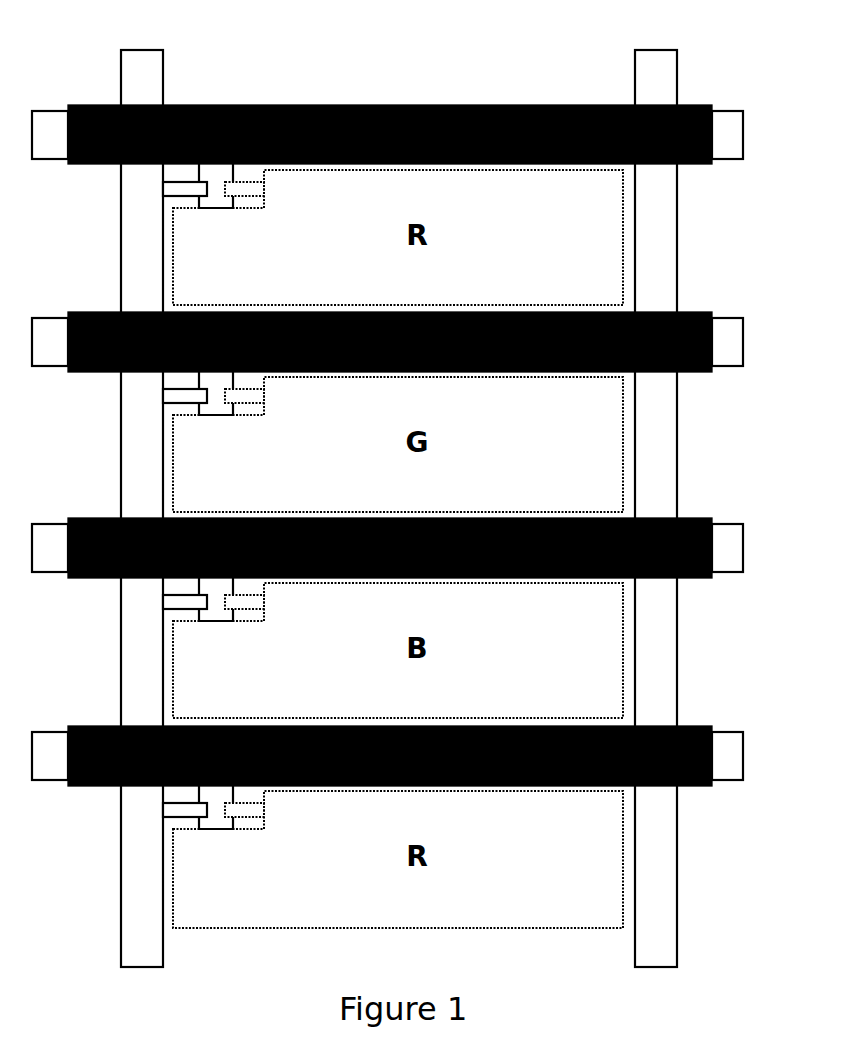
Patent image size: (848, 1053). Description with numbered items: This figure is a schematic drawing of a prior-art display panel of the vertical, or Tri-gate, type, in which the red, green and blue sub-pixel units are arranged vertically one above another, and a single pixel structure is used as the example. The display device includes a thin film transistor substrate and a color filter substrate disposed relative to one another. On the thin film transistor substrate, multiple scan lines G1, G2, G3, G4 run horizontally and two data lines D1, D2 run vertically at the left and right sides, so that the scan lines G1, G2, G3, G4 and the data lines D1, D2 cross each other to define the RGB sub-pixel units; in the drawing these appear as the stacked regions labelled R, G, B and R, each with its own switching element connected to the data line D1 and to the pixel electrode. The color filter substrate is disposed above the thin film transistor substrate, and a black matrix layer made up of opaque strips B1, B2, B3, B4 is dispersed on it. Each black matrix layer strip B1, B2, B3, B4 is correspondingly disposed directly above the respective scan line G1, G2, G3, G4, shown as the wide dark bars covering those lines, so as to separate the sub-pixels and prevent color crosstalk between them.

The data line D1 is at (138, 70).
The data line D2 is at (658, 65).
The black matrix layer B1 is at (108, 164).
The black matrix layer B2 is at (108, 372).
The black matrix layer B3 is at (108, 578).
The black matrix layer B4 is at (108, 786).
The scan line G1 is at (730, 139).
The scan line G2 is at (730, 346).
The scan line G3 is at (730, 552).
The scan line G4 is at (730, 760).